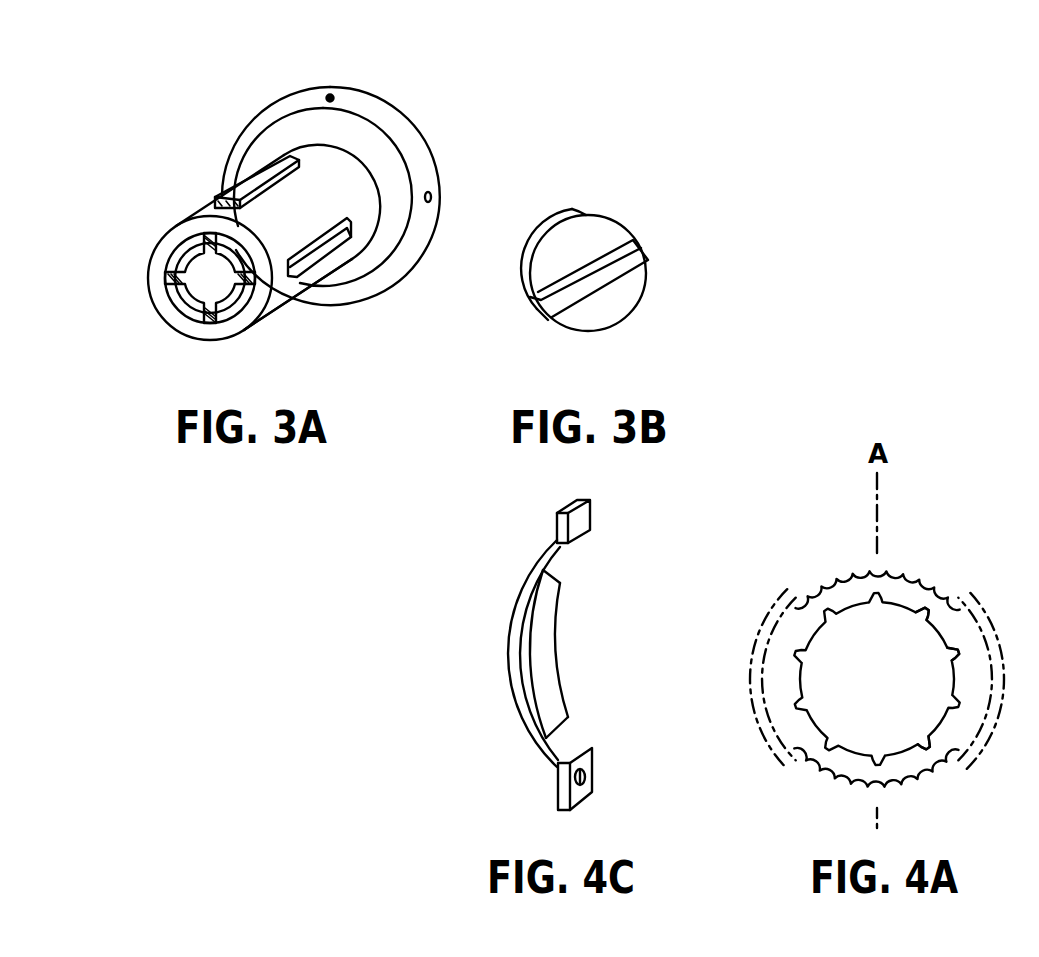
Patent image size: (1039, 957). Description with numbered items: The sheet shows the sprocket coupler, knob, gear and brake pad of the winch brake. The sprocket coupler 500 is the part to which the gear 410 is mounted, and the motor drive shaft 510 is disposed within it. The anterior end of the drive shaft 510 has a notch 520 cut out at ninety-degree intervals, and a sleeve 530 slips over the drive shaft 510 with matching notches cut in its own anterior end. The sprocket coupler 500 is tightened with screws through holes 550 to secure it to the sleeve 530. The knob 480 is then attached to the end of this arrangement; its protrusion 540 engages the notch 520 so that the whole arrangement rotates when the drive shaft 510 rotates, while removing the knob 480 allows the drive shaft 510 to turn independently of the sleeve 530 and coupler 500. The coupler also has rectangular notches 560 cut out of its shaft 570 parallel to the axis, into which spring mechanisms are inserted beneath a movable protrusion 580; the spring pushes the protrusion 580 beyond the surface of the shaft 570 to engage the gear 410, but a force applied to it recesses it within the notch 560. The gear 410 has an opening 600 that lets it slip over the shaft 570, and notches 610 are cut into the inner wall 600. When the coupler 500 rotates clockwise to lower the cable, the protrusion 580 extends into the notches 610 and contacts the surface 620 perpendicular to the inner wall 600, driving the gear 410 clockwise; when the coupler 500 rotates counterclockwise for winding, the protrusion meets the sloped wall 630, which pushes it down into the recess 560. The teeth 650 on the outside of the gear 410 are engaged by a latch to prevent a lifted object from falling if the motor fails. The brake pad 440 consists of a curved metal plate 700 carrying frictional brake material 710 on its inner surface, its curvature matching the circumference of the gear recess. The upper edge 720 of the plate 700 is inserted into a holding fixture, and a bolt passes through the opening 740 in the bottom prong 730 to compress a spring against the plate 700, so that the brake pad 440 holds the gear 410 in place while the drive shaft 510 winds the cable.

In FIG. 3A, the sprocket coupler 500 is at (278, 108).
In FIG. 3A, the holes 550 is at (333, 98).
In FIG. 3A, the movable protrusion 580 is at (255, 177).
In FIG. 3A, the drive shaft 510 is at (183, 260).
In FIG. 3A, the notch 520 is at (200, 278).
In FIG. 3A, the sleeve 530 is at (173, 297).
In FIG. 3A, the rectangular notches 560 is at (323, 253).
In FIG. 3A, the shaft 570 is at (277, 295).
In FIG. 3B, the protrusion 540 is at (647, 248).
In FIG. 3B, the knob 480 is at (642, 293).
In FIG. 4C, the brake pad 440 is at (555, 662).
In FIG. 4C, the curved metal plate 700 is at (512, 587).
In FIG. 4C, the frictional brake material 710 is at (560, 633).
In FIG. 4C, the upper edge 720 is at (578, 521).
In FIG. 4C, the bottom prong 730 is at (592, 780).
In FIG. 4C, the opening 740 is at (575, 780).
In FIG. 4A, the gear 410 is at (858, 648).
In FIG. 4A, the teeth 650 is at (806, 591).
In FIG. 4A, the opening 600 is at (800, 684).
In FIG. 4A, the notches 610 is at (920, 612).
In FIG. 4A, the surface 620 is at (950, 648).
In FIG. 4A, the sloped wall 630 is at (930, 741).